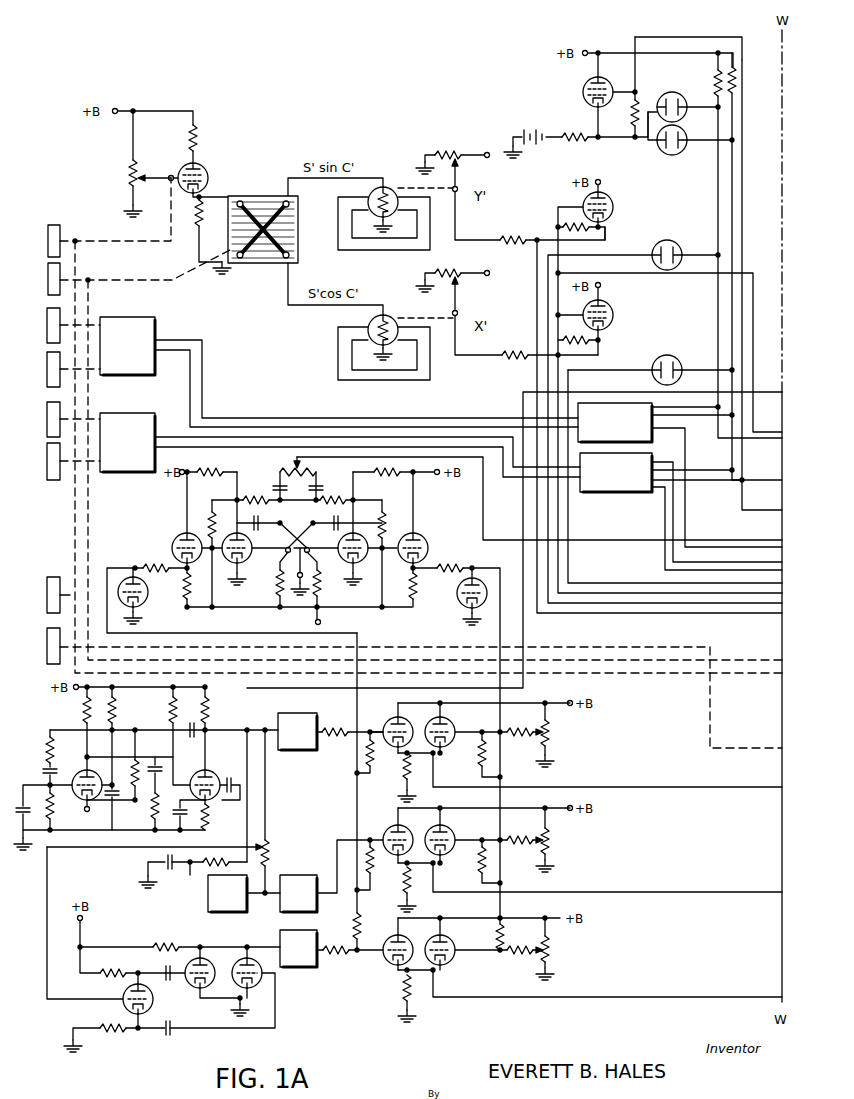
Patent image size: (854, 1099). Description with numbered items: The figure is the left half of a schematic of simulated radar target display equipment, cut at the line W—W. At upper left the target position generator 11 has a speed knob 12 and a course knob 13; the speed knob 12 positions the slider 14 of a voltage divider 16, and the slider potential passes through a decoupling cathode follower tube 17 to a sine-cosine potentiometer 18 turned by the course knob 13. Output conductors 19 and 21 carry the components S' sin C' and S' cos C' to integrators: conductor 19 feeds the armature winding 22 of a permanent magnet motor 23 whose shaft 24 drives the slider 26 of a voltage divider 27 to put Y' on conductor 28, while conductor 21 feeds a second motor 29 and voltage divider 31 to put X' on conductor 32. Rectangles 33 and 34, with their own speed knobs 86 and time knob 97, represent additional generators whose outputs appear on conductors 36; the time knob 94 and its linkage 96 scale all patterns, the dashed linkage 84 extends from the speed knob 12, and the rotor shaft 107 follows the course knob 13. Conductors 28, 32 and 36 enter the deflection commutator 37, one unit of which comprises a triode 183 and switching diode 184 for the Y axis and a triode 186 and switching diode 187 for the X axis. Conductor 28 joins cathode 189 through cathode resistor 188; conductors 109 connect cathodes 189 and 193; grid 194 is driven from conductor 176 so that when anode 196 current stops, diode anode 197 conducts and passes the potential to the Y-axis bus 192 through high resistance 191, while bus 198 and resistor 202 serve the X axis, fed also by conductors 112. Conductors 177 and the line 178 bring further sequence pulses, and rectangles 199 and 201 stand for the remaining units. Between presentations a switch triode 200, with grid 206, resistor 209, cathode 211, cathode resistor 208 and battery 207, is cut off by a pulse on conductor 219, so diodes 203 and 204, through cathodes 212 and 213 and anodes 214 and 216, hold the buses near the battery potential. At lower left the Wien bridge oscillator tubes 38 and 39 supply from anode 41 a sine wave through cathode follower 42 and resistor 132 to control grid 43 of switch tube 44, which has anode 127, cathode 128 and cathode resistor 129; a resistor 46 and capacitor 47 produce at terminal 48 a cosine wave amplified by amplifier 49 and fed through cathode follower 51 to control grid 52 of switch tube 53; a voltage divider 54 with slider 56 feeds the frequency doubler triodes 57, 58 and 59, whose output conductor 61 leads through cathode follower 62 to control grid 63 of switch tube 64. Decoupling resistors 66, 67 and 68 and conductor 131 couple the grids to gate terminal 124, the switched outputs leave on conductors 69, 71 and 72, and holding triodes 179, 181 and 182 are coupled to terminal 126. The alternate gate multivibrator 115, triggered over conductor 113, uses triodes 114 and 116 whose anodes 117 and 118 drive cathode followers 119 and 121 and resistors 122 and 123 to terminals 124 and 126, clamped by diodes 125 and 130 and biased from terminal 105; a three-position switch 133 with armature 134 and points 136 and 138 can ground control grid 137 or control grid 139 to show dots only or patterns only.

The target position generator 11 is at (258, 132).
The speed data knob 12 is at (55, 224).
The course data knob 13 is at (47, 272).
The slider 14 is at (160, 172).
The voltage divider 16 is at (128, 188).
The decoupling cathode follower tube 17 is at (205, 171).
The sine-cosine potentiometer 18 is at (260, 197).
The output conductor 19 is at (330, 180).
The output conductor 21 is at (348, 306).
The armature winding 22 is at (376, 198).
The permanent magnet motor 23 is at (332, 230).
The shaft 24 is at (408, 187).
The slider 26 is at (460, 176).
The voltage divider 27 is at (449, 154).
The conductor 28 is at (477, 224).
The second motor 29 is at (332, 361).
The voltage divider 31 is at (447, 271).
The conductor 32 is at (498, 360).
The rectangle representing additional target position generator unit 33 is at (137, 354).
The rectangle representing additional target position generator unit 34 is at (137, 451).
The conductors 36 is at (392, 430).
The deflection commutator 37 is at (582, 308).
The discharge tube 38 is at (84, 771).
The discharge tube 39 is at (230, 780).
The anode 41 is at (200, 771).
The cathode follower 42 is at (303, 713).
The control grid 43 is at (375, 753).
The switch tube 44 is at (397, 728).
The resistor 46 is at (205, 867).
The capacitor 47 is at (148, 862).
The midpoint output terminal 48 is at (189, 868).
The amplifier 49 is at (208, 906).
The cathode follower 51 is at (313, 873).
The control grid 52 is at (375, 866).
The switch tube 53 is at (389, 837).
The voltage divider 54 is at (274, 846).
The slider 56 is at (251, 848).
The triode 57 is at (153, 997).
The triode 58 is at (217, 979).
The triode 59 is at (246, 985).
The output conductor 61 is at (270, 946).
The cathode follower 62 is at (283, 929).
The control grid 63 is at (384, 955).
The switch tube 64 is at (392, 938).
The decoupling resistor 66 is at (360, 774).
The decoupling resistor 67 is at (360, 892).
The decoupling resistor 68 is at (354, 929).
The conductor 69 is at (770, 788).
The conductor 71 is at (607, 877).
The conductor 72 is at (607, 983).
The dashed control line 84 is at (79, 280).
The speed knobs 86 is at (47, 311).
The time knob 94 is at (47, 662).
The mechanical linkage 96 is at (133, 646).
The time knob 97 is at (48, 579).
The negative supply terminal 105 is at (301, 618).
The rotor shaft 107 is at (91, 301).
The conductors 109 is at (528, 283).
The conductors 112 is at (636, 578).
The conductor 113 is at (295, 456).
The triode 114 is at (250, 537).
The alternate gate multivibrator 115 is at (663, 511).
The triode 116 is at (341, 536).
The anode 117 is at (221, 553).
The anode 118 is at (372, 553).
The decoupling cathode follower 119 is at (186, 537).
The decoupling cathode follower 121 is at (420, 537).
The resistor 122 is at (167, 564).
The resistor 123 is at (446, 564).
The gate output terminal 124 is at (133, 566).
The diode 125 is at (147, 597).
The gate output terminal 126 is at (473, 566).
The anode 127 is at (391, 724).
The cathode 128 is at (409, 754).
The cathode resistor 129 is at (404, 783).
The diode 130 is at (471, 596).
The conductor 131 is at (360, 693).
The resistor 132 is at (336, 727).
The manual three-position switch 133 is at (311, 607).
The grounded armature 134 is at (309, 529).
The switch point 136 is at (277, 568).
The control grid 137 is at (285, 552).
The switch point 138 is at (320, 568).
The control grid 139 is at (310, 552).
The conductor 176 is at (624, 276).
The conductor 177 is at (746, 462).
The line representing additional conductors 178 is at (719, 548).
The holding triode 179 is at (451, 723).
The holding triode 181 is at (450, 833).
The holding triode 182 is at (449, 958).
The triode 183 is at (613, 200).
The switching diode 184 is at (678, 244).
The triode 186 is at (610, 308).
The switching diode 187 is at (670, 355).
The cathode resistor 188 is at (551, 233).
The cathode 189 is at (607, 226).
The high resistance 191 is at (715, 74).
The bus bar 192 is at (716, 197).
The diode cathode 193 is at (655, 256).
The triode grid 194 is at (585, 201).
The anode 196 is at (606, 196).
The diode anode 197 is at (681, 252).
The X-axis bus 198 is at (738, 196).
The rectangle representing deflection commutator units 199 is at (629, 431).
The switch triode 200 is at (603, 84).
The rectangle representing deflection commutator units 201 is at (629, 481).
The bus resistor 202 is at (736, 85).
The diode 203 is at (685, 113).
The diode 204 is at (686, 151).
The grid 206 is at (584, 92).
The fixed bias battery 207 is at (530, 128).
The cathode resistor 208 is at (584, 143).
The resistor 209 is at (633, 122).
The cathode 211 is at (588, 100).
The cathode 212 is at (661, 100).
The cathode 213 is at (658, 142).
The anode 214 is at (682, 99).
The anode 216 is at (686, 128).
The conductor 219 is at (744, 42).